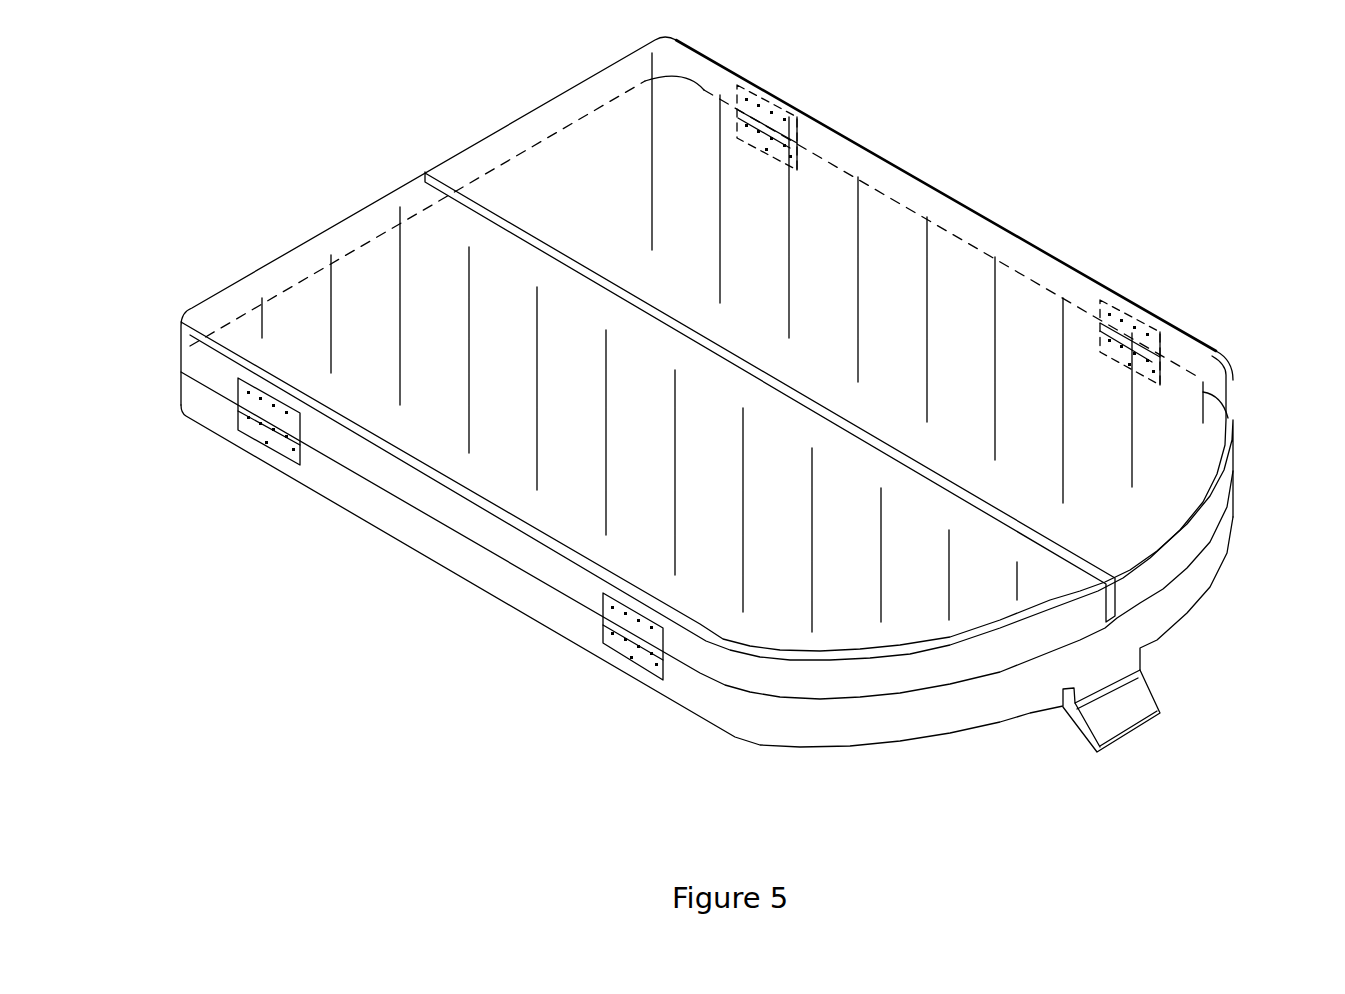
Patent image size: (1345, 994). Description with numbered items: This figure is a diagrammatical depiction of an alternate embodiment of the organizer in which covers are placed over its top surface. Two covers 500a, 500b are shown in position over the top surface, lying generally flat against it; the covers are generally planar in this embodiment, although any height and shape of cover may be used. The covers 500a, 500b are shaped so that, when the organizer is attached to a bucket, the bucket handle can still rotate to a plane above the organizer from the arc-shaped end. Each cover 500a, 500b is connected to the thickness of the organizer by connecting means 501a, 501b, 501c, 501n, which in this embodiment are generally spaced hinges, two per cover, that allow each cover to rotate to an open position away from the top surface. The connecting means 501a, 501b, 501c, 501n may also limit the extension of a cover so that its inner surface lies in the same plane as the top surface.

The cover 500a is at (1193, 445).
The cover 500b is at (852, 630).
The connecting means 501a is at (612, 643).
The connecting means 501b is at (243, 430).
The connecting means 501c is at (1150, 337).
The connecting means 501n is at (787, 117).